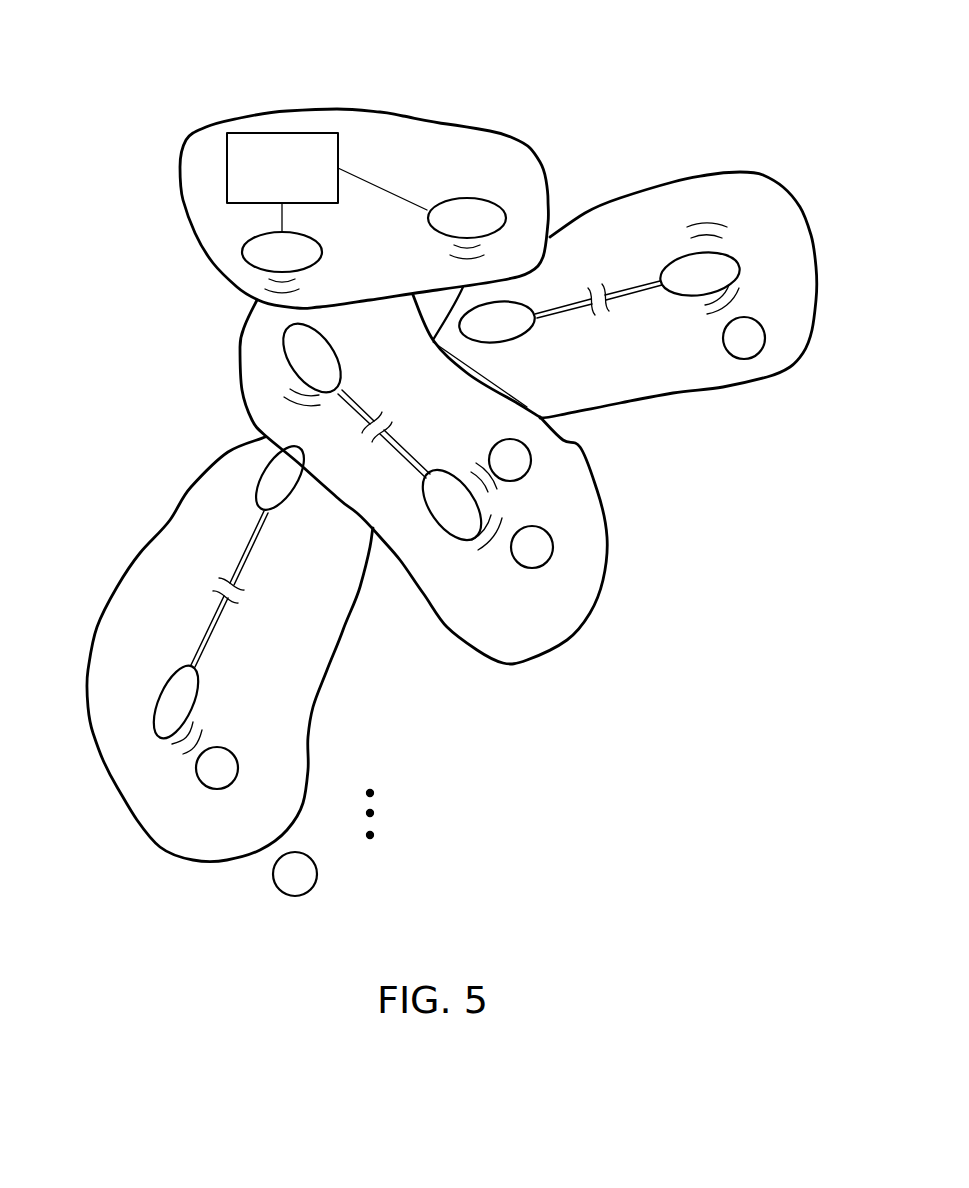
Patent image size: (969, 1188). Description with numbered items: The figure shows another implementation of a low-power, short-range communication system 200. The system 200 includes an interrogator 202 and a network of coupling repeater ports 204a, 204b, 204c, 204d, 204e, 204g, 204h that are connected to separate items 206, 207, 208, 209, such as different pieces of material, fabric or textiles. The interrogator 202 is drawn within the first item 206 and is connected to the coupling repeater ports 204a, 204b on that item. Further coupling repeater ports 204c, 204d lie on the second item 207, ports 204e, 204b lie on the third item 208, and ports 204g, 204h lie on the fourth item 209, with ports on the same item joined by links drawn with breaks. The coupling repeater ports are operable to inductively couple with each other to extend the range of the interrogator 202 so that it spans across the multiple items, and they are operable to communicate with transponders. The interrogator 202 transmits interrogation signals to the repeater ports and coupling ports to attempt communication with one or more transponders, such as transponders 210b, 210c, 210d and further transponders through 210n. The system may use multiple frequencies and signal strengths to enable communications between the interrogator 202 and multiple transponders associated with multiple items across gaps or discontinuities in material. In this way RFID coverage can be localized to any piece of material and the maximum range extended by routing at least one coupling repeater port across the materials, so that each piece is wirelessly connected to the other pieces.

The low-power, short-range communication system 200 is at (553, 77).
The interrogator 202 is at (296, 192).
The coupling repeater port 204a is at (243, 246).
The coupling repeater port 204b is at (493, 198).
The coupling repeater port 204c is at (283, 343).
The coupling repeater port 204d is at (443, 527).
The coupling repeater port 204e is at (522, 338).
The coupling repeater port 204g is at (255, 468).
The coupling repeater port 204h is at (162, 726).
The item 206 is at (455, 166).
The item 207 is at (402, 346).
The item 208 is at (652, 242).
The item 209 is at (330, 575).
The transponder 210b is at (548, 562).
The transponder 210c is at (757, 357).
The transponder 210d is at (238, 766).
The transponder 210n is at (317, 873).